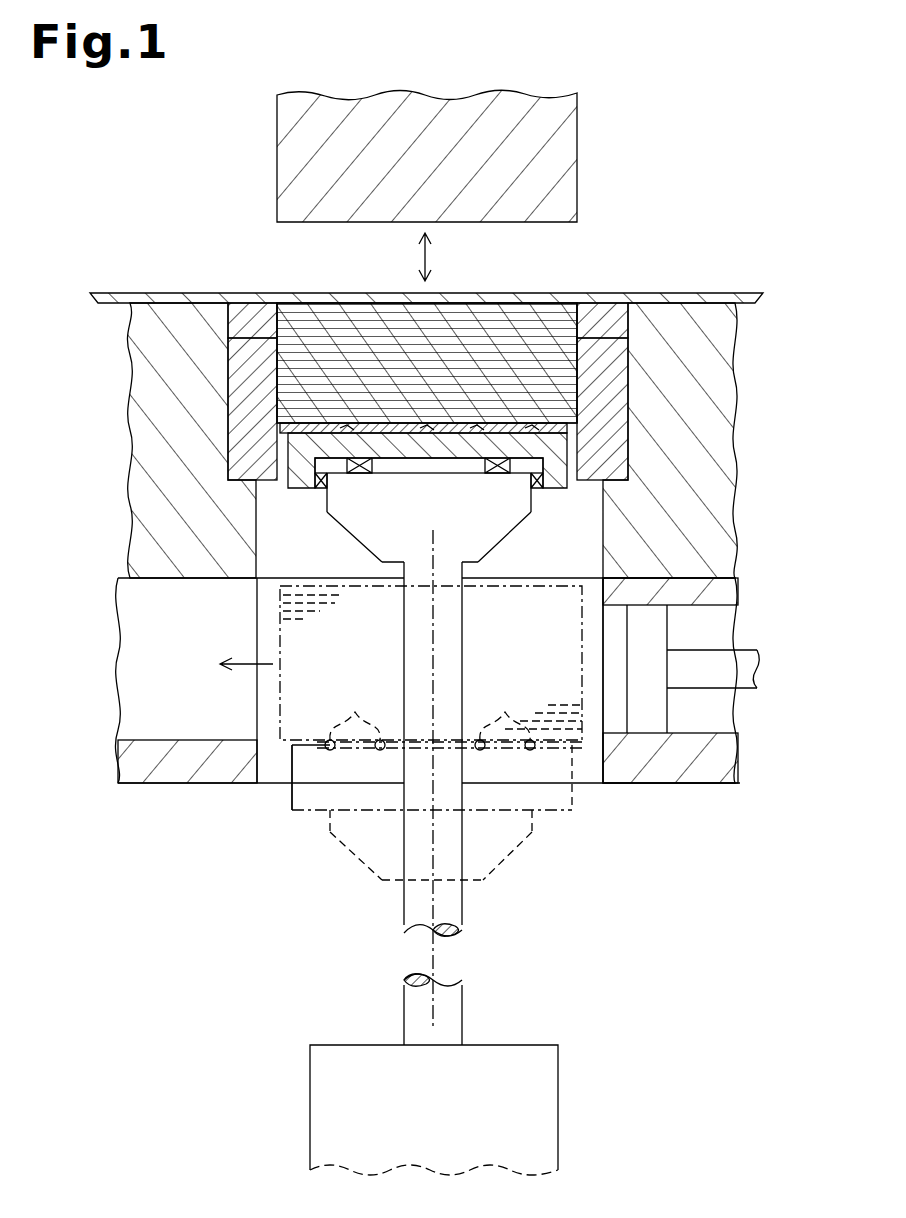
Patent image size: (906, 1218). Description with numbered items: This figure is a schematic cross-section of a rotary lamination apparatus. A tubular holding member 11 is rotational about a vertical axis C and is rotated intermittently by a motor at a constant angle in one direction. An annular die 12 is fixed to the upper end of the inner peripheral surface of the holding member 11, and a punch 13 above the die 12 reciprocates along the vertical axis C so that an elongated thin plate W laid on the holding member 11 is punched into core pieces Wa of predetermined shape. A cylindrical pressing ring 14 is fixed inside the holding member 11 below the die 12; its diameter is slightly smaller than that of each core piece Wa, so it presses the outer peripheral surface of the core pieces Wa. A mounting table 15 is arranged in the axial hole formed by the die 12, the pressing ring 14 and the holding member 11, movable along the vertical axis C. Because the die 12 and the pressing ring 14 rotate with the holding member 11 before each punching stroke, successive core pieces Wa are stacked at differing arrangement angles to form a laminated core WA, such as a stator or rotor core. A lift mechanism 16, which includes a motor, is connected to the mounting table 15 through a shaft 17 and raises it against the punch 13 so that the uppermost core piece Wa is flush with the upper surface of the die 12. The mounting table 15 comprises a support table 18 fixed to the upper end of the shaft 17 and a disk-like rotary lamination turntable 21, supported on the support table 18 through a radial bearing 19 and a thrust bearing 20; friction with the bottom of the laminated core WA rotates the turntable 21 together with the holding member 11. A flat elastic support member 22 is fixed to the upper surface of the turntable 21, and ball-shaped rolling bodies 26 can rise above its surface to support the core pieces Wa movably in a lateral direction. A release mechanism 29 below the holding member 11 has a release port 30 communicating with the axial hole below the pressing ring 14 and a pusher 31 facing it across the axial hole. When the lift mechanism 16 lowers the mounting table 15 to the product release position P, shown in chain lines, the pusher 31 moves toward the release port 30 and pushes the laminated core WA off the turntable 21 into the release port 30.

The holding member 11 is at (163, 310).
The die 12 is at (247, 310).
The punch 13 is at (288, 143).
The pressing ring 14 is at (230, 405).
The mounting table 15 is at (334, 513).
The lift mechanism 16 is at (352, 1046).
The shaft 17 is at (414, 906).
The support table 18 is at (492, 535).
The radial bearing 19 is at (328, 481).
The thrust bearing 20 is at (370, 465).
The rotary lamination turntable 21 is at (553, 482).
The support member 22 is at (283, 430).
The rolling body 26 is at (525, 437).
The release mechanism 29 is at (209, 784).
The release port 30 is at (158, 743).
The pusher 31 is at (645, 722).
The thin plate W is at (320, 302).
The laminated core WA is at (484, 281).
The core piece Wa is at (550, 305).
The vertical axis C is at (433, 662).
The product release position P is at (288, 763).